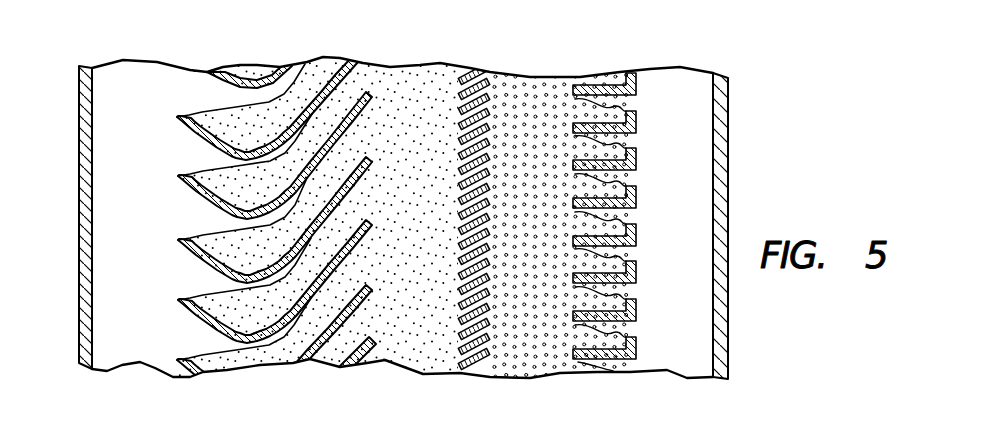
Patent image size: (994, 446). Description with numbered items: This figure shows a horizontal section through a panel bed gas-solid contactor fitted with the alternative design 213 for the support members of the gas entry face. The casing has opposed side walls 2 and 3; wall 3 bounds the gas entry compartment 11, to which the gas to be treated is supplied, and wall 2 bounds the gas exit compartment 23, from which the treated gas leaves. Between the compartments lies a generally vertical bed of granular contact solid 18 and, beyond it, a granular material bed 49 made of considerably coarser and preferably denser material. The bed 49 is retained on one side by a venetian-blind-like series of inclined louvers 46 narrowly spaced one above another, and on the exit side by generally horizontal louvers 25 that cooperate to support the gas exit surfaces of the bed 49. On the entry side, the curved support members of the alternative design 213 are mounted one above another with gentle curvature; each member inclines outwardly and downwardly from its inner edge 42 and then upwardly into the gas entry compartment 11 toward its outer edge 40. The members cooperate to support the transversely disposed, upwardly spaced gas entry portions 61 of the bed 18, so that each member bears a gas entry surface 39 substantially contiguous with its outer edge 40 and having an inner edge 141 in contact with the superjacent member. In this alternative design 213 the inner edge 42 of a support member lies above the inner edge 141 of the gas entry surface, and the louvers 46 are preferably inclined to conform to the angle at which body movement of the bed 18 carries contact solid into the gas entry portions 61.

The side wall 2 is at (728, 323).
The side wall 3 is at (79, 173).
The gas entry compartment 11 is at (117, 313).
The bed of granular contact solid 18 is at (412, 337).
The gas exit compartment 23 is at (673, 345).
The louvers 25 is at (636, 242).
The gas entry surface 39 is at (197, 172).
The outer edge 40 is at (186, 239).
The inner edge 42 is at (372, 160).
The louvers 46 is at (483, 223).
The granular material bed 49 is at (527, 353).
The gas entry portions 61 is at (238, 245).
The inner edge 141 is at (237, 334).
The alternative design for support members 213 is at (197, 194).